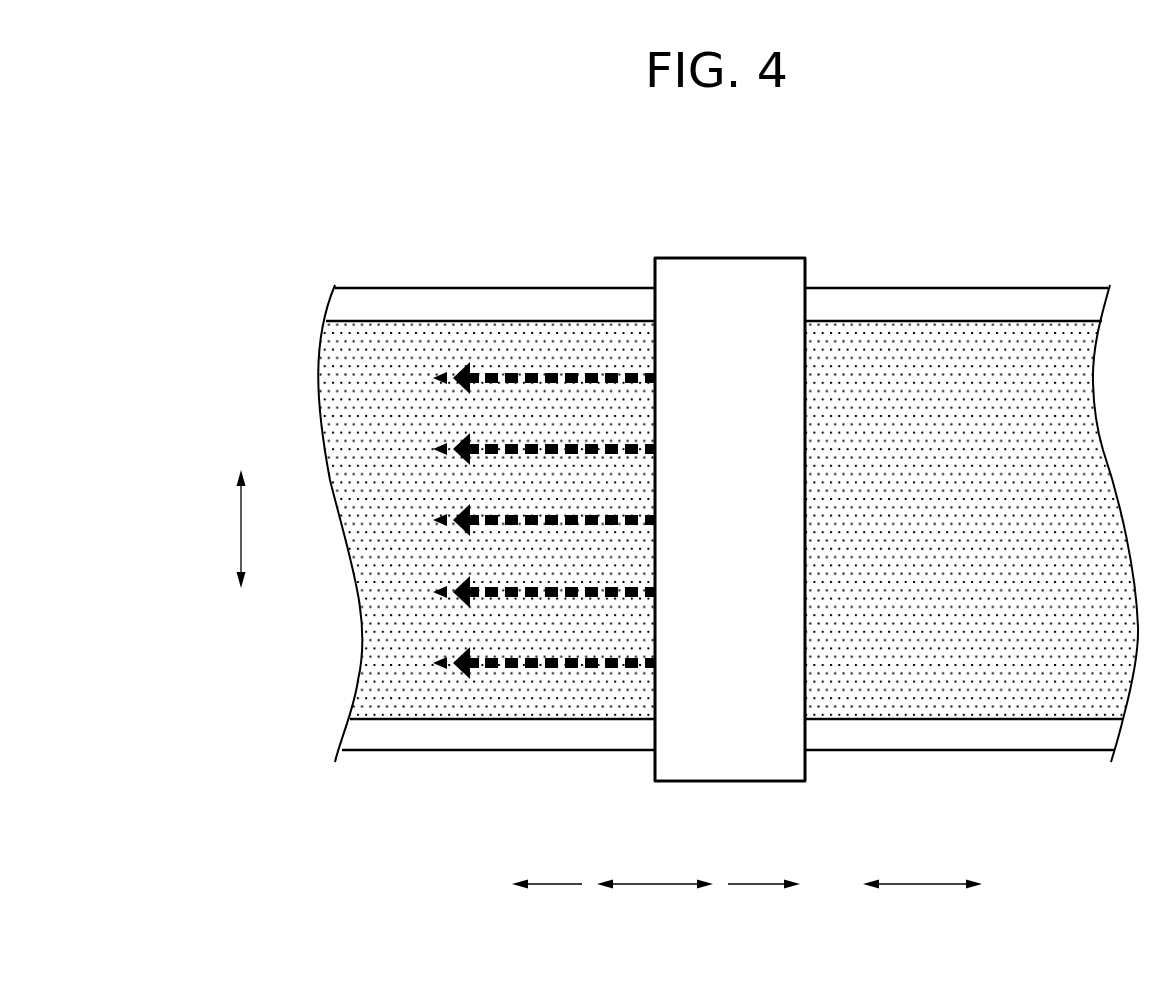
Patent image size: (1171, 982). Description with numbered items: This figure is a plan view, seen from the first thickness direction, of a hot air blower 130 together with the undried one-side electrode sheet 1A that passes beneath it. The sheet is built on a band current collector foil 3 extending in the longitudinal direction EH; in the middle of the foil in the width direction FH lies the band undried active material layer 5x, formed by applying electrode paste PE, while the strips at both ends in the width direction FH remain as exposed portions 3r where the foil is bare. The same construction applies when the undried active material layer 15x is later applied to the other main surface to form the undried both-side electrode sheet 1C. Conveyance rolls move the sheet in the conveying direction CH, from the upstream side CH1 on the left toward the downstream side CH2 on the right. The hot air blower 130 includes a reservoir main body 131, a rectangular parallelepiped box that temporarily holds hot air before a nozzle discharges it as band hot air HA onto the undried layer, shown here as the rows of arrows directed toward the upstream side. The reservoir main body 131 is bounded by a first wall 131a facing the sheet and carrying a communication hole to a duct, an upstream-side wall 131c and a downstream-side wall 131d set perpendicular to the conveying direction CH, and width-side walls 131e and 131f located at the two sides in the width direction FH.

The undried active material layer 5x is at (725, 450).
The undried active material layer 15x is at (725, 450).
The electrode paste PE is at (388, 343).
The exposed portion 3r is at (725, 507).
The current collector foil 3 is at (918, 302).
The undried one-side electrode sheet 1A is at (470, 809).
The undried both-side electrode sheet 1C is at (441, 757).
The band hot air HA is at (440, 345).
The hot air blower 130 is at (762, 506).
The reservoir main body 131 is at (762, 506).
The first wall 131a is at (765, 433).
The upstream-side wall 131c is at (654, 307).
The downstream-side wall 131d is at (805, 510).
The width-side wall 131e is at (702, 258).
The width-side wall 131f is at (747, 782).
The width direction FH is at (221, 529).
The upstream side CH1 is at (547, 905).
The conveying direction CH is at (655, 905).
The downstream side CH2 is at (764, 904).
The longitudinal direction EH is at (922, 904).